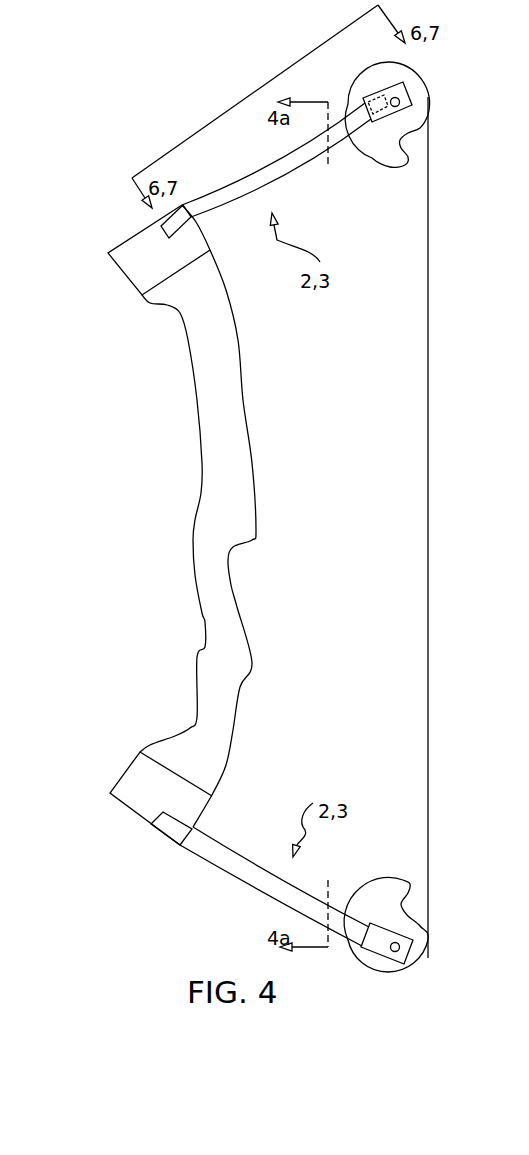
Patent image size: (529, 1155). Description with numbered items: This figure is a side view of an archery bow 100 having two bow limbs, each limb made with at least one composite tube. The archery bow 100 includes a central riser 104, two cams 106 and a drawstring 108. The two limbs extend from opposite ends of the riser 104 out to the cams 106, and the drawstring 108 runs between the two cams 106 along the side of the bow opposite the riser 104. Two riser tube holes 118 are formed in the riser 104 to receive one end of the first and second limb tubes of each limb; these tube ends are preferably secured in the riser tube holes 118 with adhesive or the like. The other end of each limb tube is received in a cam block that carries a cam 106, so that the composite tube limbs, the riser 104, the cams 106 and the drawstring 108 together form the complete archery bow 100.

The archery bow 100 is at (155, 587).
The riser 104 is at (210, 615).
The cams 106 is at (403, 160).
The drawstring 108 is at (160, 232).
The riser tube holes 118 is at (153, 817).